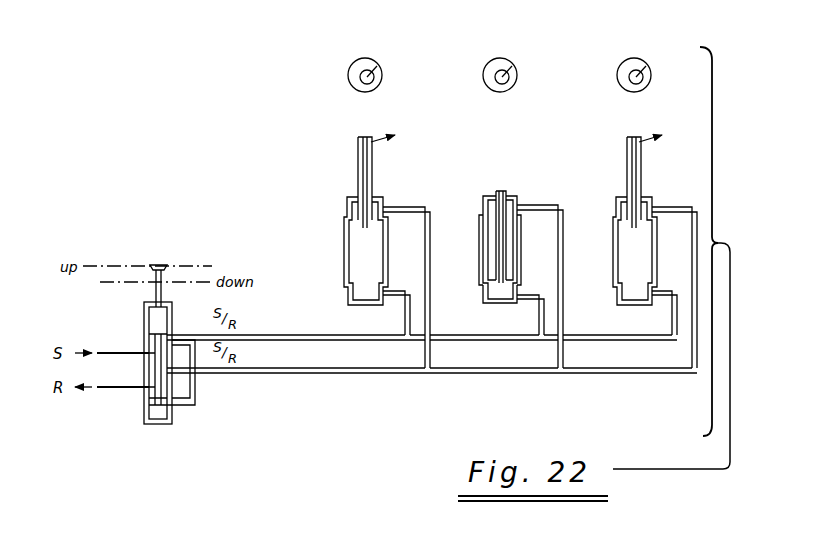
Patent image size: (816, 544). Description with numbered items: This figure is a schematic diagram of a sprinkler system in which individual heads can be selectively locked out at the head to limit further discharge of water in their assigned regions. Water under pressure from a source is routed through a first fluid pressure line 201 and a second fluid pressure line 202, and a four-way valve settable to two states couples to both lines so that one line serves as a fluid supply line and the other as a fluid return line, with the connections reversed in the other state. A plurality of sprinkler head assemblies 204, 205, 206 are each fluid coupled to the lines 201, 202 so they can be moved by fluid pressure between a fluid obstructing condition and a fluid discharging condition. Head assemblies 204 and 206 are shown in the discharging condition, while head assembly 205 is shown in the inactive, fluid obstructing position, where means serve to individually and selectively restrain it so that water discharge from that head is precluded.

The first fluid pressure line 201 is at (308, 326).
The second fluid pressure line 202 is at (308, 375).
The sprinkler head assembly 204 is at (334, 251).
The sprinkler head assembly 205 is at (480, 253).
The sprinkler head assembly 206 is at (612, 252).